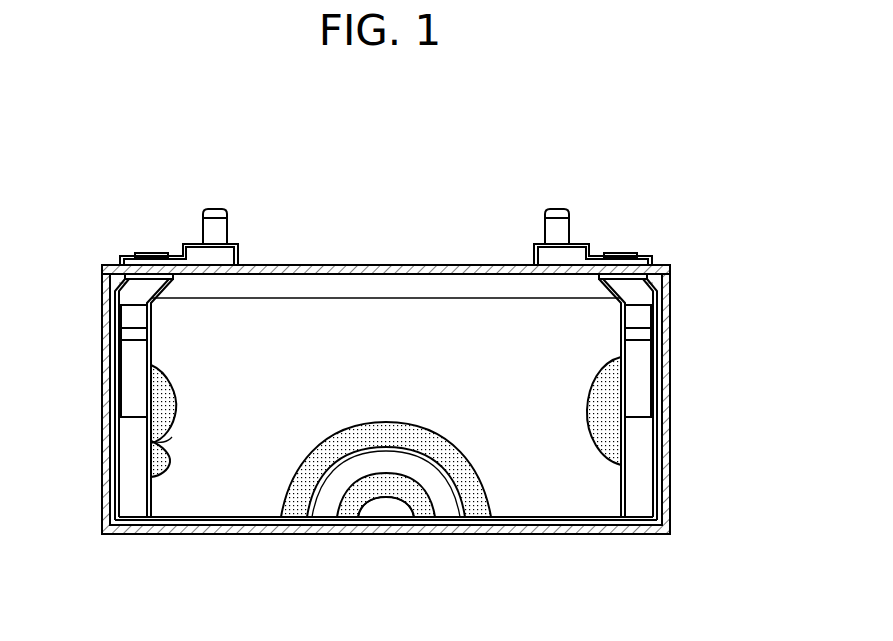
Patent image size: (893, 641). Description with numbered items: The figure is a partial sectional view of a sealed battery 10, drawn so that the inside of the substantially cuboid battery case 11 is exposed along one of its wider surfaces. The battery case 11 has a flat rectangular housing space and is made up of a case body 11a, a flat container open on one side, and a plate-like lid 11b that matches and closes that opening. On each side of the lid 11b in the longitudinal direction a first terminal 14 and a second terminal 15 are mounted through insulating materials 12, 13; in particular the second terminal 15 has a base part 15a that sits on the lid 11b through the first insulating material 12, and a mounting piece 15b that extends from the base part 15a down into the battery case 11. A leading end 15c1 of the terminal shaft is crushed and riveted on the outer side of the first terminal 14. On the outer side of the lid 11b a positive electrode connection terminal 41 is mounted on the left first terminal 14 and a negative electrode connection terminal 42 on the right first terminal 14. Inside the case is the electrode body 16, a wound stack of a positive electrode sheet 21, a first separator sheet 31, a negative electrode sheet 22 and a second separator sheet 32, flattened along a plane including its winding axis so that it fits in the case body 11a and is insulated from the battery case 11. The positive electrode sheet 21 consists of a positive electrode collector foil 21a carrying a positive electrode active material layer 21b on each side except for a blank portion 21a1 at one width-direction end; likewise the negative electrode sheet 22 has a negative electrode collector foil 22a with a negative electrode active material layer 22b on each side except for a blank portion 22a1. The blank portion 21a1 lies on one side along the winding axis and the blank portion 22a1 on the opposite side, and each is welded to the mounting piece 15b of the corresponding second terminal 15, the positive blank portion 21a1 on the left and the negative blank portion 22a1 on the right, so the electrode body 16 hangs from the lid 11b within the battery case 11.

The sealed battery 10 is at (704, 165).
The battery case 11 is at (672, 317).
The case body 11a is at (669, 412).
The lid 11b is at (318, 265).
The first insulating material 12 is at (120, 283).
The insulating material 13 is at (109, 266).
The first terminal 14 is at (186, 244).
The second terminal 15 is at (177, 281).
The base part 15a is at (152, 308).
The mounting piece 15b is at (118, 386).
The leading end 15c1 is at (152, 253).
The electrode body 16 is at (268, 296).
The positive electrode sheet 21 is at (348, 519).
The positive electrode collector foil 21a is at (113, 462).
The blank portion 21a1 is at (136, 508).
The positive electrode active material layer 21b is at (177, 402).
The negative electrode sheet 22 is at (291, 519).
The negative electrode collector foil 22a is at (658, 462).
The blank portion 22a1 is at (641, 510).
The negative electrode active material layer 22b is at (170, 460).
The first separator sheet 31 is at (324, 519).
The second separator sheet 32 is at (383, 519).
The positive electrode connection terminal 41 is at (218, 207).
The negative electrode connection terminal 42 is at (558, 207).